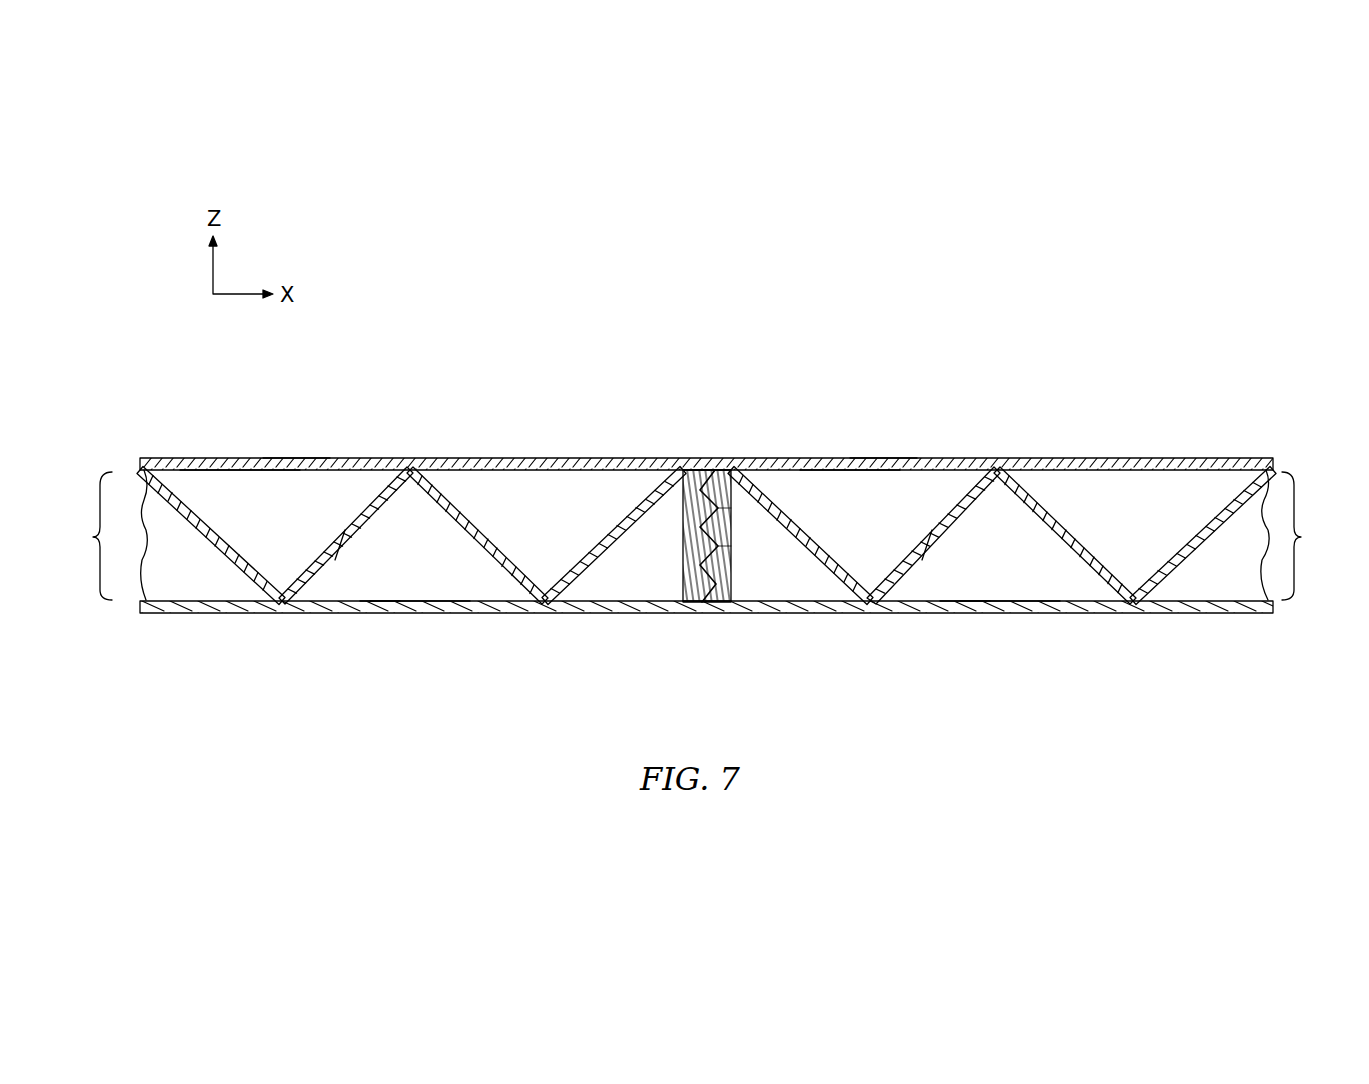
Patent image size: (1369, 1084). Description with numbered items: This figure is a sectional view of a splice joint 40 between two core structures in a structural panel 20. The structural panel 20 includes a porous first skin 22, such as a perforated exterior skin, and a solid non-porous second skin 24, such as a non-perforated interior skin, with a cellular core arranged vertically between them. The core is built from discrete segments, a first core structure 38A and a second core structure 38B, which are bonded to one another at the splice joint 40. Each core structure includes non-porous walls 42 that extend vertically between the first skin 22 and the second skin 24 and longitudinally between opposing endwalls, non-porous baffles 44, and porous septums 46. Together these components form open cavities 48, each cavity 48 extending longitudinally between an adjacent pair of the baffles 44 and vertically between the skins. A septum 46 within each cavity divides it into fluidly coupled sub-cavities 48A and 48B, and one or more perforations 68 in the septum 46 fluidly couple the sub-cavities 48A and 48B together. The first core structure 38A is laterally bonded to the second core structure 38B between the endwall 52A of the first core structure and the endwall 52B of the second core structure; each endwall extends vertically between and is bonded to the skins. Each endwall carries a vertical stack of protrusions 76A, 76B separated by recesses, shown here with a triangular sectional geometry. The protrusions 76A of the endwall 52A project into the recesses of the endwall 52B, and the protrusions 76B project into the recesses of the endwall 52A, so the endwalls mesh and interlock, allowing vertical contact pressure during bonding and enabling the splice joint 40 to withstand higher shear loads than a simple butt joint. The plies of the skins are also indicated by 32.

The structural panel 20 is at (1076, 406).
The first skin 22 is at (134, 458).
The second skin 24 is at (144, 618).
The plies of face sheet 32 is at (330, 458).
The first core structure 38A is at (80, 536).
The second core structure 38B is at (1318, 536).
The splice joint 40 is at (713, 424).
The non-porous walls 42 is at (138, 605).
The non-porous baffles 44 is at (212, 560).
The porous septums 46 is at (337, 550).
The cavities 48 is at (384, 606).
The sub-cavity 48A is at (268, 516).
The sub-cavity 48B is at (436, 548).
The endwall 52A is at (690, 460).
The endwall 52B is at (718, 612).
The perforations 68 is at (335, 560).
The protrusions 76A is at (713, 460).
The protrusions 76B is at (730, 520).